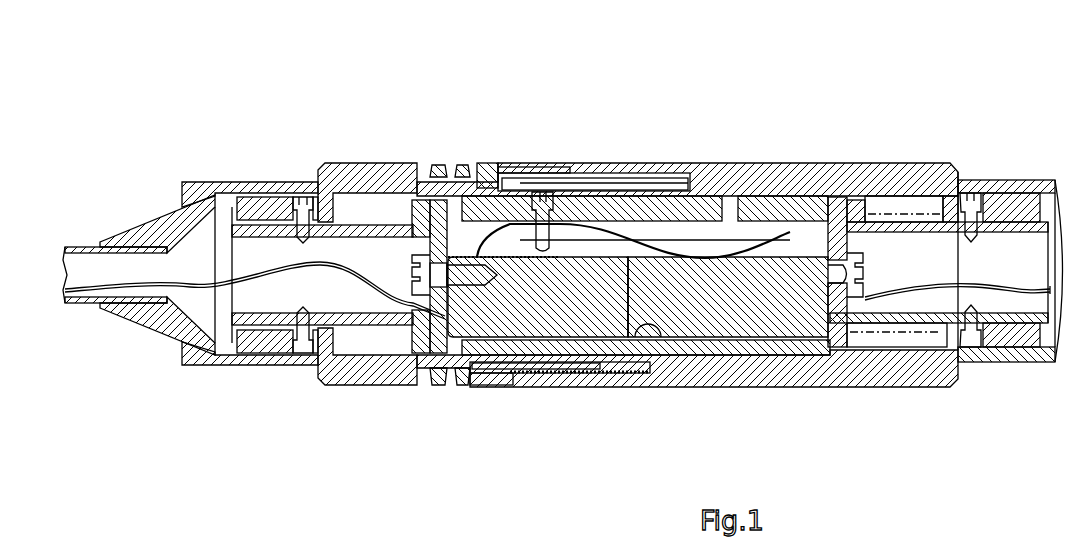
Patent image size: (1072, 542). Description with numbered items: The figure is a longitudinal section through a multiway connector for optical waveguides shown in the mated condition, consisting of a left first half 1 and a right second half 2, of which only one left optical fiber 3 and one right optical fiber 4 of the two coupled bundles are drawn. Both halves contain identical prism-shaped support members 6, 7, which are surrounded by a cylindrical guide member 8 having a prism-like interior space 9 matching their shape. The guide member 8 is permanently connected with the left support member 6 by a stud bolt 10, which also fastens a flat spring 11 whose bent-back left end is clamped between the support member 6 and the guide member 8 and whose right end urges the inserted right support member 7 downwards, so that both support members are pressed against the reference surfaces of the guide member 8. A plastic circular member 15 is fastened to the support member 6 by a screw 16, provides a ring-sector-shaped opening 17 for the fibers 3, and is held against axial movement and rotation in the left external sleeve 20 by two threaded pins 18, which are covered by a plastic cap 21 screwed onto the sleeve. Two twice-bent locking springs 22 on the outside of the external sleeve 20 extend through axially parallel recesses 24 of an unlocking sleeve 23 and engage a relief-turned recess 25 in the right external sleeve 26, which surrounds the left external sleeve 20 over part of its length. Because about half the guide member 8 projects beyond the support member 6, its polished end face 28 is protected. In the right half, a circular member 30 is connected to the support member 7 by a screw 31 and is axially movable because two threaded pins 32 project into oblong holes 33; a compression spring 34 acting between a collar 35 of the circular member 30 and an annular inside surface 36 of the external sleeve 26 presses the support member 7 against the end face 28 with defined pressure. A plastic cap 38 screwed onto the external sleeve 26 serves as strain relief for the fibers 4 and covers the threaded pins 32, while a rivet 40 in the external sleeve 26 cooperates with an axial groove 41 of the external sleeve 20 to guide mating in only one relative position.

The first half 1 is at (322, 78).
The second half 2 is at (715, 82).
The left optical fiber 3 is at (183, 290).
The right optical fiber 4 is at (1022, 300).
The left support member 6 is at (597, 313).
The right support member 7 is at (713, 307).
The guide member 8 is at (770, 200).
The prism-like interior space 9 is at (702, 230).
The stud bolt 10 is at (548, 195).
The flat spring 11 is at (620, 228).
The circular member 15 is at (375, 310).
The screw 16 is at (410, 300).
The ring-sector-shaped opening 17 is at (445, 290).
The threaded pins 18 is at (290, 348).
The left external sleeve 20 is at (378, 167).
The plastic cap 21 is at (112, 305).
The locking springs 22 is at (552, 380).
The unlocking sleeve 23 is at (436, 167).
The recesses 24 is at (488, 378).
The recess 25 is at (503, 380).
The right external sleeve 26 is at (865, 370).
The end face 28 is at (660, 307).
The circular member 30 is at (840, 330).
The screw 31 is at (862, 288).
The threaded pins 32 is at (978, 350).
The oblong holes 33 is at (988, 225).
The compression spring 34 is at (875, 213).
The collar 35 is at (845, 210).
The annular inside surface 36 is at (942, 205).
The plastic cap 38 is at (1037, 180).
The rivet 40 is at (495, 165).
The axial groove 41 is at (535, 165).